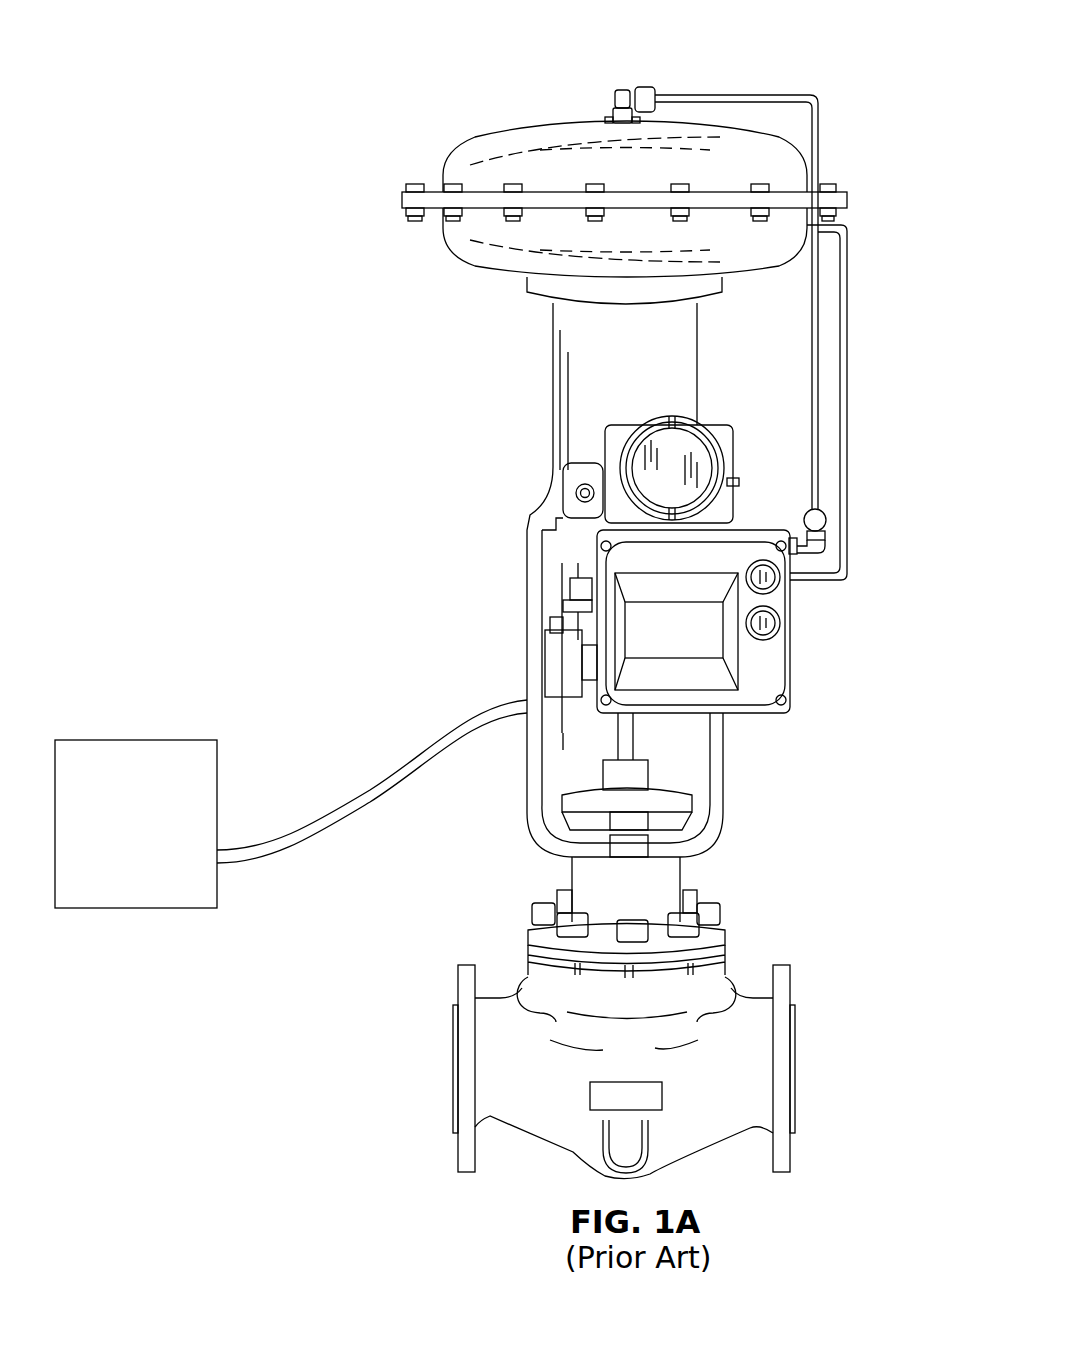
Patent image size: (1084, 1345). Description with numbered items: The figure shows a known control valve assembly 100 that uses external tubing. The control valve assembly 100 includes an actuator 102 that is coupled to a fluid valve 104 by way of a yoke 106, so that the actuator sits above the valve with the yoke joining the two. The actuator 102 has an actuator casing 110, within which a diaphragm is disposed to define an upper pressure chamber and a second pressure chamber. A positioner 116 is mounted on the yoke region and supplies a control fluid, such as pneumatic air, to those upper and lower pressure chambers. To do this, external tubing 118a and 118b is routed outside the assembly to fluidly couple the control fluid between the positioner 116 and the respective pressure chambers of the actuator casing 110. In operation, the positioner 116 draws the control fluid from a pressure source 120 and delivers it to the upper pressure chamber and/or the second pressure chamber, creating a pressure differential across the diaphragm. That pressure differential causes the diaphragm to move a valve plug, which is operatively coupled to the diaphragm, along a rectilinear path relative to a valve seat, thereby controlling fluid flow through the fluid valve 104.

The control valve assembly 100 is at (358, 60).
The actuator 102 is at (505, 357).
The fluid valve 104 is at (453, 1040).
The yoke 106 is at (548, 465).
The actuator casing 110 is at (450, 253).
The positioner 116 is at (783, 677).
The external tubing 118a is at (820, 135).
The external tubing 118b is at (848, 305).
The pressure source 120 is at (176, 908).